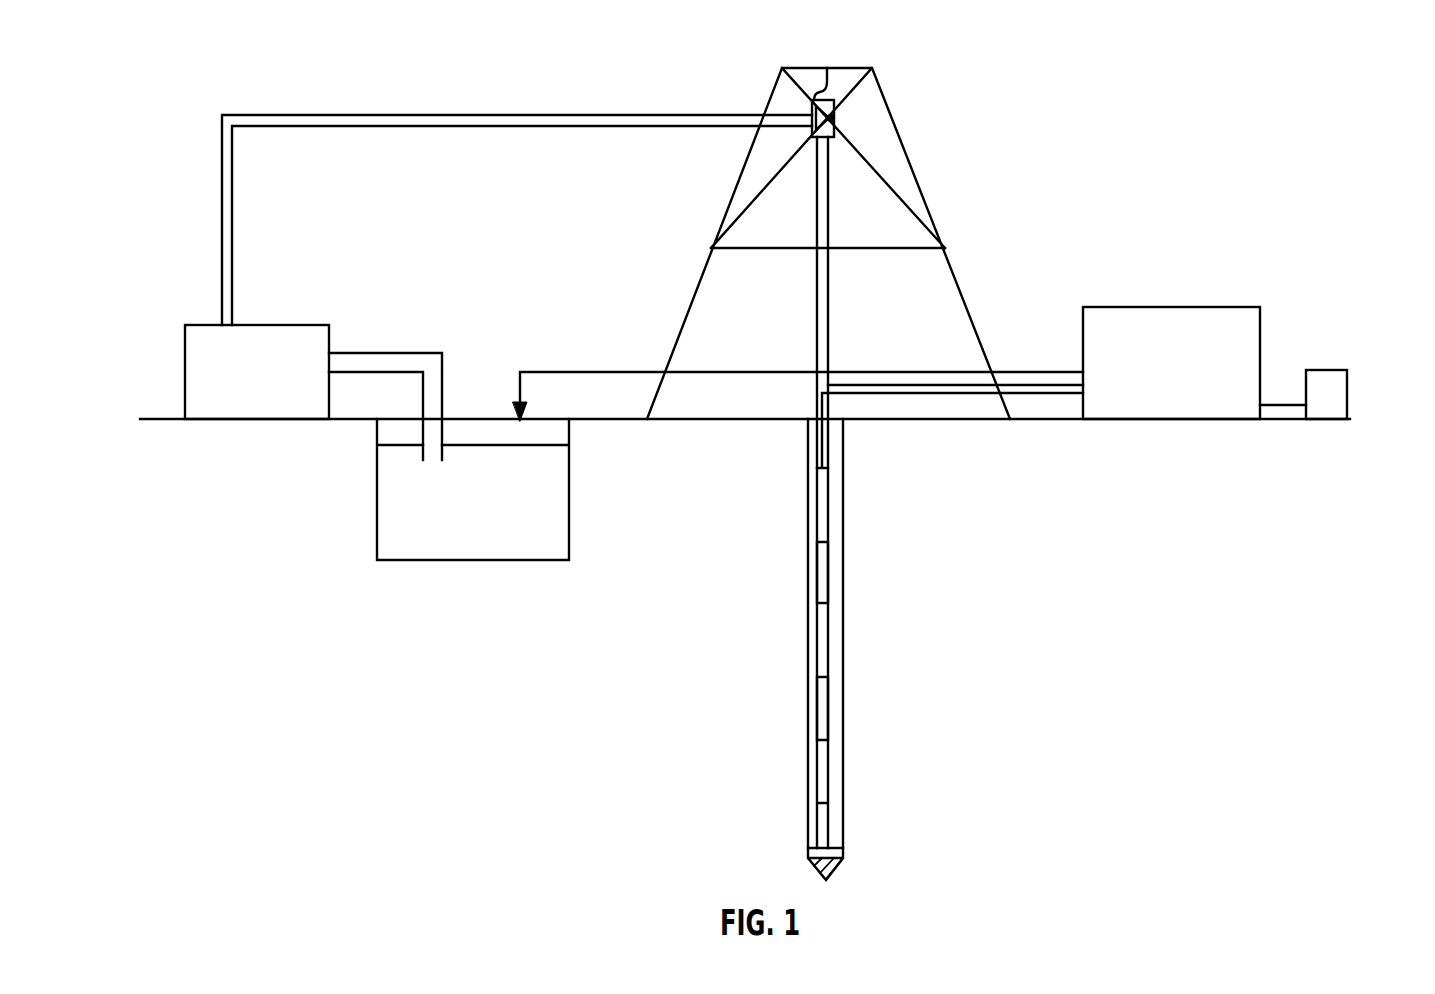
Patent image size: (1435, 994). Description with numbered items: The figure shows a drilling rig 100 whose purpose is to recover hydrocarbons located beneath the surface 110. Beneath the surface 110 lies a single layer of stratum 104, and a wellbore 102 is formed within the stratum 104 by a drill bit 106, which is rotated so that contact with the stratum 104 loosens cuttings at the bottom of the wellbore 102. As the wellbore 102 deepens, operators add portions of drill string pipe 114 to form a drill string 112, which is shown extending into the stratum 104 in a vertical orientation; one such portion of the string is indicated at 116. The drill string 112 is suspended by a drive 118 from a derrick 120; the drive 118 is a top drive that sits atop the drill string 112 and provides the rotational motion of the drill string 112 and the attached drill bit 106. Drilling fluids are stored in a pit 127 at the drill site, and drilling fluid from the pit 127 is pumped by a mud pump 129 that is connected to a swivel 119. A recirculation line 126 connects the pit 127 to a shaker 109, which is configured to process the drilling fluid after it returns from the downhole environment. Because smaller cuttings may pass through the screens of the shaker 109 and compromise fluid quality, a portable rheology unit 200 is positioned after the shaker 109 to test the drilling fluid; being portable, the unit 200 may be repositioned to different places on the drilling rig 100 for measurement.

The drilling rig 100 is at (226, 58).
The wellbore 102 is at (845, 440).
The stratum 104 is at (1105, 506).
The drill bit 106 is at (838, 867).
The shaker 109 is at (1190, 307).
The surface 110 is at (761, 417).
The drill string 112 is at (834, 768).
The drill string pipe 114 is at (832, 572).
The bottom hole assembly 116 is at (835, 688).
The drive 118 is at (822, 76).
The swivel 119 is at (835, 117).
The derrick 120 is at (923, 186).
The recirculation line 126 is at (598, 370).
The pit 127 is at (473, 562).
The mud pump 129 is at (256, 424).
The portable rheology unit 200 is at (1327, 370).